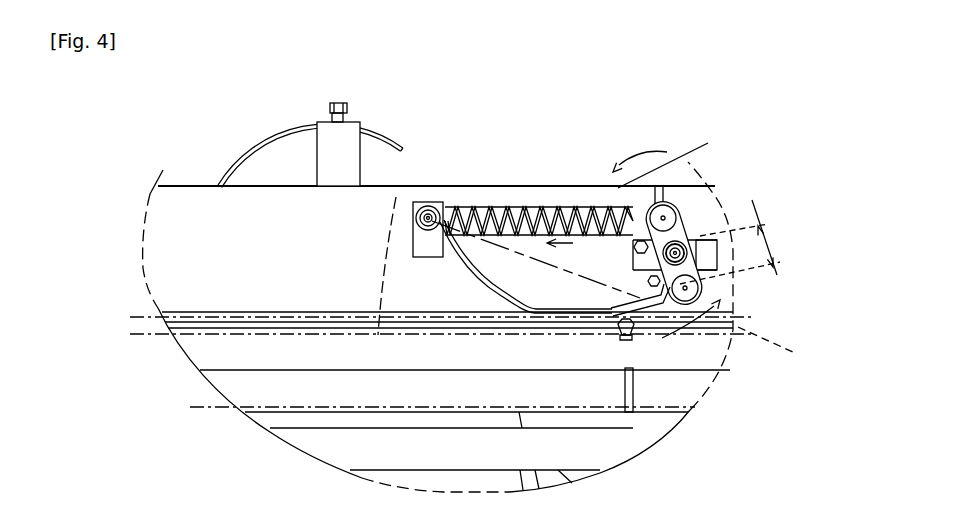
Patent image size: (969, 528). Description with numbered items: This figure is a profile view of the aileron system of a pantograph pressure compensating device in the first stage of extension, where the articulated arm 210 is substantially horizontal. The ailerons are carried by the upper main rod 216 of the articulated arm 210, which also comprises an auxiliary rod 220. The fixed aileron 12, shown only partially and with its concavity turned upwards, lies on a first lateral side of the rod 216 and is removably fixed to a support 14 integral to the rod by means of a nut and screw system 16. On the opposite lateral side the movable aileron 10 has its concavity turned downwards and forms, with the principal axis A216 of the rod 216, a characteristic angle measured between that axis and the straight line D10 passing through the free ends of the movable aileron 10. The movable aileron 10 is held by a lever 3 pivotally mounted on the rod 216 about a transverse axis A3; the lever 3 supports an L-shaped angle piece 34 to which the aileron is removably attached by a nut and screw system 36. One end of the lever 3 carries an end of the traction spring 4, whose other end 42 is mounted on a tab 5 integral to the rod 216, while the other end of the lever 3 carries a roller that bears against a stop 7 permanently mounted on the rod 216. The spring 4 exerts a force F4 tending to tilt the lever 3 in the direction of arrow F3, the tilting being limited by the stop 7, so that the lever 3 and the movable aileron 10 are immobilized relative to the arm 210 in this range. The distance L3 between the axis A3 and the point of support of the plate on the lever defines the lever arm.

The fixed aileron 12 is at (284, 128).
The support 14 is at (341, 150).
The nut and screw system 16 is at (341, 103).
The traction spring 4 is at (525, 200).
The other end of the traction spring 42 is at (432, 203).
The tab 5 is at (401, 240).
The L-shaped angle piece 34 is at (645, 268).
The lever 3 is at (697, 210).
The axis A3 is at (690, 237).
The stop 7 is at (712, 256).
The nut and screw system 36 is at (630, 342).
The movable aileron 10 is at (516, 322).
The upper main rod 216 is at (197, 256).
The principal axis A216 is at (414, 340).
The articulated arm 210 is at (168, 394).
The auxiliary rod 220 is at (353, 450).
The distance L3 is at (736, 242).
The arrow F3 is at (666, 245).
The force F4 is at (573, 254).
The straight line D10 is at (781, 353).